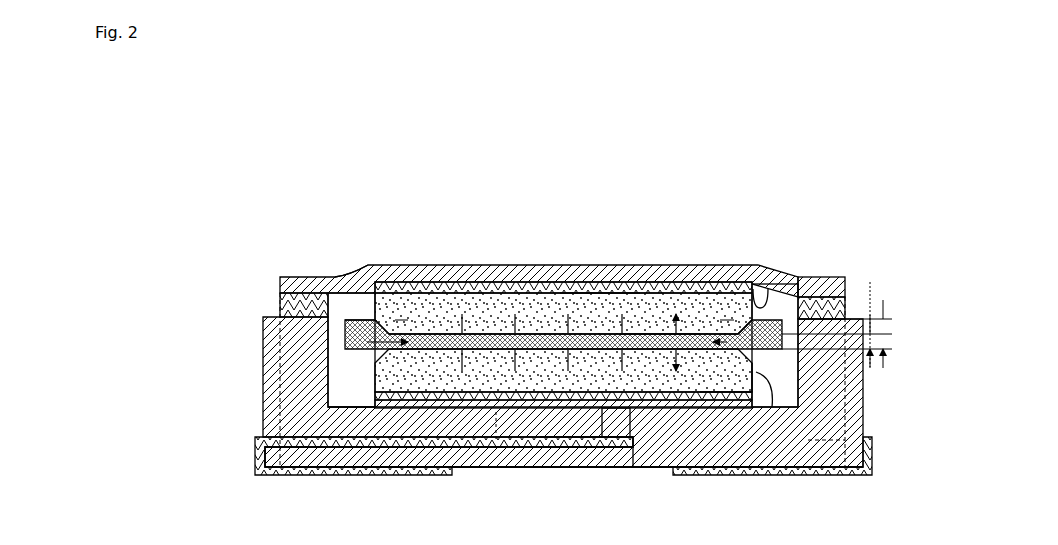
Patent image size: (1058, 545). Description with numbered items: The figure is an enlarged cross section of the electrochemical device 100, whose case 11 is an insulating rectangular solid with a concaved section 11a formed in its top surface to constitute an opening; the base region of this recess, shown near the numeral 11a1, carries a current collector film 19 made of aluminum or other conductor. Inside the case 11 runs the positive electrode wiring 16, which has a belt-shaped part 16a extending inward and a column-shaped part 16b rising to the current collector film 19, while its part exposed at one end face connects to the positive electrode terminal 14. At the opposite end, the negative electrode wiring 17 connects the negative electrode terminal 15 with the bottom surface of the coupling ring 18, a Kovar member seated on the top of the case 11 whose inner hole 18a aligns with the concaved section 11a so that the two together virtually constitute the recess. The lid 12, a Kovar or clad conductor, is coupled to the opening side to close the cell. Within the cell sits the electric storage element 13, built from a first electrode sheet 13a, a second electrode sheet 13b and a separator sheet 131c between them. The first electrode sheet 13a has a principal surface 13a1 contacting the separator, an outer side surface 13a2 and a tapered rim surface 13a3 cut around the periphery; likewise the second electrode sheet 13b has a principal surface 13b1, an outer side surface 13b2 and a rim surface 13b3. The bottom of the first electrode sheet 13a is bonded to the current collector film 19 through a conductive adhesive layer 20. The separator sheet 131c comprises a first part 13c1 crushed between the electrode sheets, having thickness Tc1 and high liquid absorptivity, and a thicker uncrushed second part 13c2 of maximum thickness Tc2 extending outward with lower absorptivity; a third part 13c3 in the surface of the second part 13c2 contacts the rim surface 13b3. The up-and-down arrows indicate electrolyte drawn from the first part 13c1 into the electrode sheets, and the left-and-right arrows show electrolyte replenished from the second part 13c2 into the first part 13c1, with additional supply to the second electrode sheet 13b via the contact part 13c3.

The electrochemical device 100 is at (746, 168).
The case 11 is at (263, 357).
The concaved section 11a is at (345, 396).
The bottom of recess 11a1 is at (352, 410).
The lid 12 is at (280, 283).
The electric storage element 13 is at (563, 352).
The first electrode sheet 13a is at (445, 370).
The principal surface 13a1 is at (603, 408).
The outer side surface 13a2 is at (743, 407).
The rim surface 13a3 is at (754, 357).
The second electrode sheet 13b is at (517, 308).
The principal surface 13b1 is at (595, 303).
The outer side surface 13b2 is at (766, 300).
The rim surface 13b3 is at (352, 306).
The separator sheet 131c is at (482, 337).
The first part 13c1 is at (655, 325).
The second part 13c2 is at (778, 320).
The third part 13c3 is at (747, 322).
The positive electrode terminal 14 is at (270, 476).
The negative electrode terminal 15 is at (853, 476).
The positive electrode wiring 16 is at (307, 448).
The belt-shaped part 16a is at (547, 448).
The column-shaped part 16b is at (495, 442).
The negative electrode wiring 17 is at (823, 442).
The coupling ring 18 is at (280, 306).
The inner hole 18a is at (336, 277).
The current collector film 19 is at (467, 408).
The conductive adhesive layer 20 is at (673, 394).
The thickness of high liquid absorptivity part Tc1 is at (837, 313).
The thickness of low liquid absorptivity part Tc2 is at (844, 342).